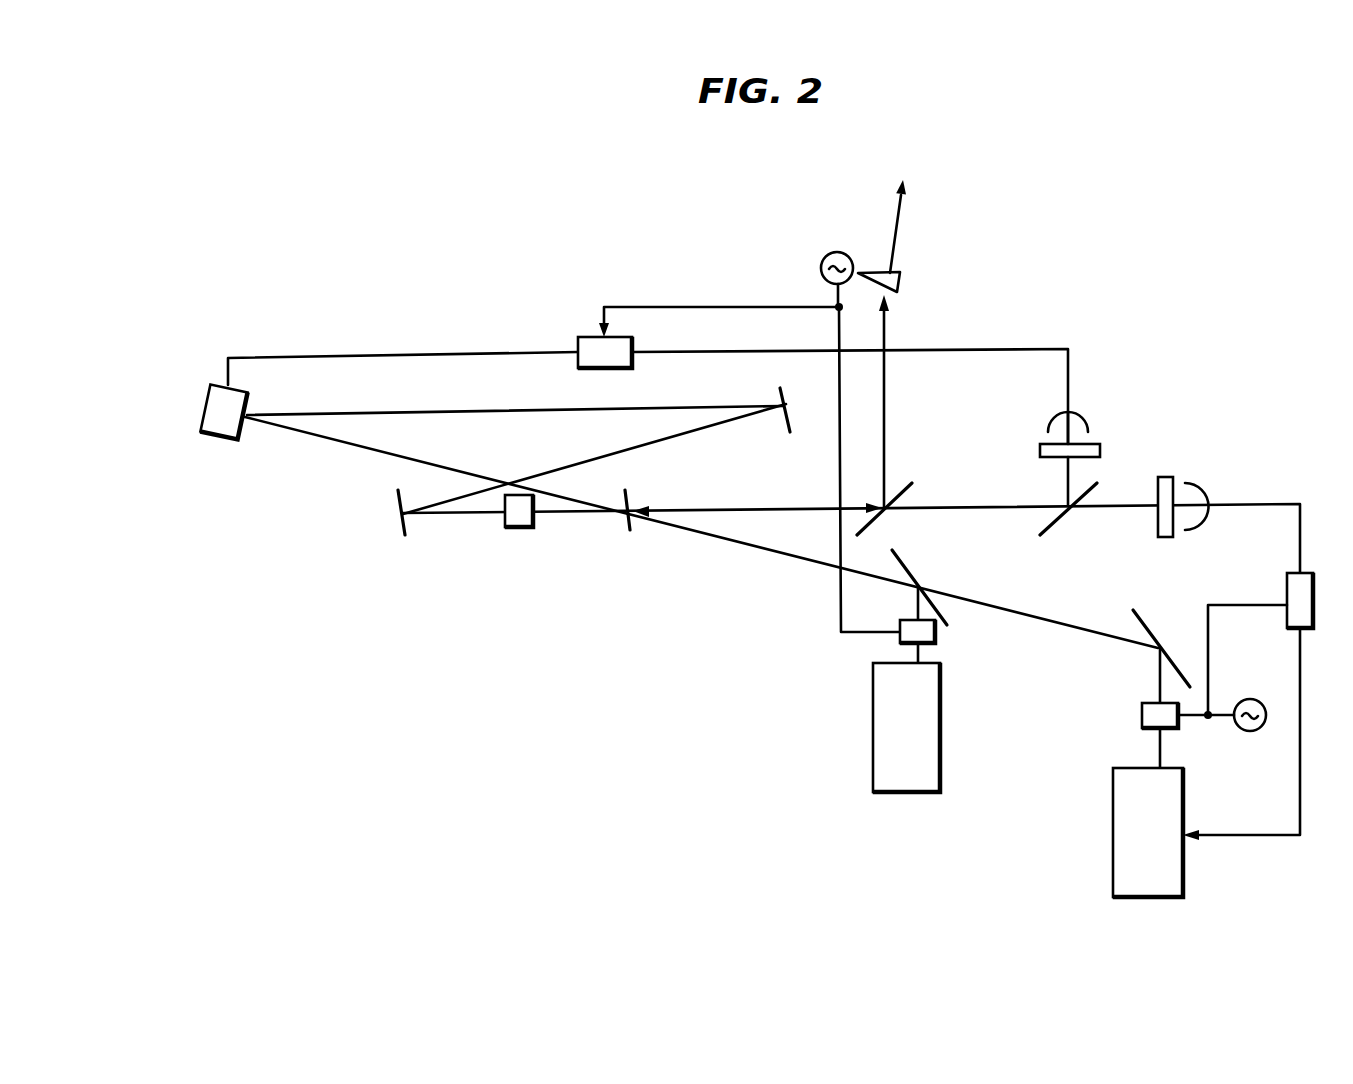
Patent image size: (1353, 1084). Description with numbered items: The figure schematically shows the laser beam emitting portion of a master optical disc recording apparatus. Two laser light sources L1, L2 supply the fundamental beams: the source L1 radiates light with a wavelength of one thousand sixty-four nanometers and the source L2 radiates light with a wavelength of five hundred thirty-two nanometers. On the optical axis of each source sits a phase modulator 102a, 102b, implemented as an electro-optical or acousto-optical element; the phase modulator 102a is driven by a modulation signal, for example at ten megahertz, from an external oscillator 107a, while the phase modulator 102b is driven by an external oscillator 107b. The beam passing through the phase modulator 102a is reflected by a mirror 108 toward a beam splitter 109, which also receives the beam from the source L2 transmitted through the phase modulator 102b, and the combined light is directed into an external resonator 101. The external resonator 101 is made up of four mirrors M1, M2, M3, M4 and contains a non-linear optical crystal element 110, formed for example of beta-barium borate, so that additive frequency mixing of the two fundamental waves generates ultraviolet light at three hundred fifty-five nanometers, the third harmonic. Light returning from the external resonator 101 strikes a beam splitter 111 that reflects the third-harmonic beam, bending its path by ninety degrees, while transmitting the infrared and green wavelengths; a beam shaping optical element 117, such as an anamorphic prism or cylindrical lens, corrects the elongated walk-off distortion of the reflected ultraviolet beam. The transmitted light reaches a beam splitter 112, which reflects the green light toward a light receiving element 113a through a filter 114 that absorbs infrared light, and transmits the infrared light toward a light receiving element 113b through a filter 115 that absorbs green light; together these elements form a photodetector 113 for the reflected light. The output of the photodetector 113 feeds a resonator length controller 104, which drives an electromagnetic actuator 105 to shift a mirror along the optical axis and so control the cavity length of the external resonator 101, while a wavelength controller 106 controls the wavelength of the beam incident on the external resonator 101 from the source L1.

The external resonator 101 is at (381, 558).
The phase modulator 102a is at (1141, 716).
The phase modulator 102b is at (937, 636).
The resonator length controller 104 is at (587, 336).
The electromagnetic actuator 105 is at (226, 442).
The wavelength controller 106 is at (1286, 590).
The external oscillator 107a is at (1248, 698).
The external oscillator 107b is at (838, 251).
The mirror 108 is at (1137, 613).
The beam splitter 109 is at (904, 563).
The non-linear optical crystal element 110 is at (513, 528).
The beam splitter 111 is at (909, 487).
The beam splitter 112 is at (1068, 528).
The photodetector 113 is at (1161, 455).
The light receiving element 113a is at (1186, 484).
The light receiving element 113b is at (1087, 421).
The filter 114 is at (1155, 520).
The filter 115 is at (1040, 446).
The beam shaping optical element 117 is at (905, 284).
The mirror M1 is at (632, 497).
The mirror M2 is at (254, 402).
The mirror M3 is at (791, 418).
The mirror M4 is at (397, 498).
The laser light source L1 is at (1150, 898).
The laser light source L2 is at (908, 793).